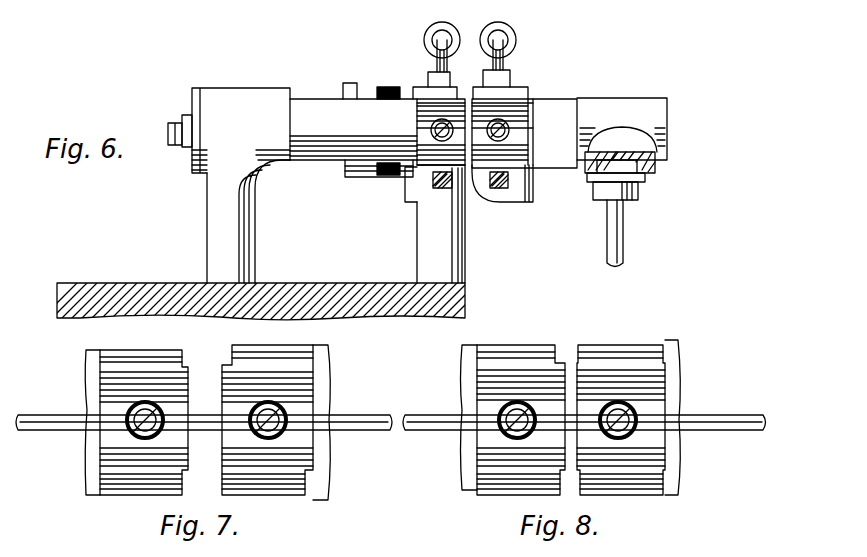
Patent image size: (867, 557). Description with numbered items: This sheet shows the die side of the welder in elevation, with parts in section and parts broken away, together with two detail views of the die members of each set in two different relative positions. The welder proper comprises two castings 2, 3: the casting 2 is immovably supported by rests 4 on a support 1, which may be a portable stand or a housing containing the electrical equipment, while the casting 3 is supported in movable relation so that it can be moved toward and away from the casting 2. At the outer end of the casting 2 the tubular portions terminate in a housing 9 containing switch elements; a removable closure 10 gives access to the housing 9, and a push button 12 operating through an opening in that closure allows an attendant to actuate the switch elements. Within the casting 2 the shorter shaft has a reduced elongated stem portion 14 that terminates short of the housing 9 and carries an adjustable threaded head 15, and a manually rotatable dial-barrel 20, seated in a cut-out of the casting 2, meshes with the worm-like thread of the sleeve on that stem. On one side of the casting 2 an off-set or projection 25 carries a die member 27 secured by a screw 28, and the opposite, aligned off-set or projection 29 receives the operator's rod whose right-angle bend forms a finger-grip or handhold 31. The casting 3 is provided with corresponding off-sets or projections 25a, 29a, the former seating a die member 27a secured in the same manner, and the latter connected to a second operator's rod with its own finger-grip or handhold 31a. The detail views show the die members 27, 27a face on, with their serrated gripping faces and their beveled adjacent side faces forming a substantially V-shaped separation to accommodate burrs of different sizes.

In FIG. 6, the support 1 is at (615, 236).
In FIG. 6, the casting 2 is at (326, 106).
In FIG. 7, the casting 2 is at (90, 478).
In FIG. 8, the casting 2 is at (468, 477).
In FIG. 6, the casting 3 is at (575, 99).
In FIG. 7, the casting 3 is at (310, 488).
In FIG. 8, the casting 3 is at (672, 455).
In FIG. 6, the rests 4 is at (240, 231).
In FIG. 6, the housing 9 is at (252, 96).
In FIG. 6, the removable closure 10 is at (192, 106).
In FIG. 6, the push button 12 is at (174, 138).
In FIG. 7, the reduced elongated stem portion 14 is at (110, 402).
In FIG. 8, the reduced elongated stem portion 14 is at (485, 383).
In FIG. 7, the head 15 is at (218, 375).
In FIG. 8, the head 15 is at (584, 422).
In FIG. 6, the dial-barrel 20 is at (357, 170).
In FIG. 6, the off-set or projection 25 is at (428, 84).
In FIG. 7, the off-set or projection 25 is at (140, 362).
In FIG. 8, the off-set or projection 25 is at (512, 360).
In FIG. 6, the off-set or projection 25a is at (505, 95).
In FIG. 7, the off-set or projection 25a is at (268, 360).
In FIG. 8, the off-set or projection 25a is at (612, 357).
In FIG. 6, the die member 27 is at (420, 114).
In FIG. 7, the die member 27 is at (108, 388).
In FIG. 8, the die member 27 is at (535, 380).
In FIG. 6, the die member 27a is at (532, 114).
In FIG. 7, the die member 27a is at (305, 365).
In FIG. 8, the die member 27a is at (660, 375).
In FIG. 6, the screw 28 is at (420, 134).
In FIG. 7, the screw 28 is at (140, 418).
In FIG. 8, the screw 28 is at (505, 430).
In FIG. 6, the off-set or projection 29 is at (412, 196).
In FIG. 6, the off-set or projection 29a is at (530, 200).
In FIG. 6, the finger-grip or handhold 31 is at (438, 44).
In FIG. 6, the finger-grip or handhold 31a is at (502, 45).